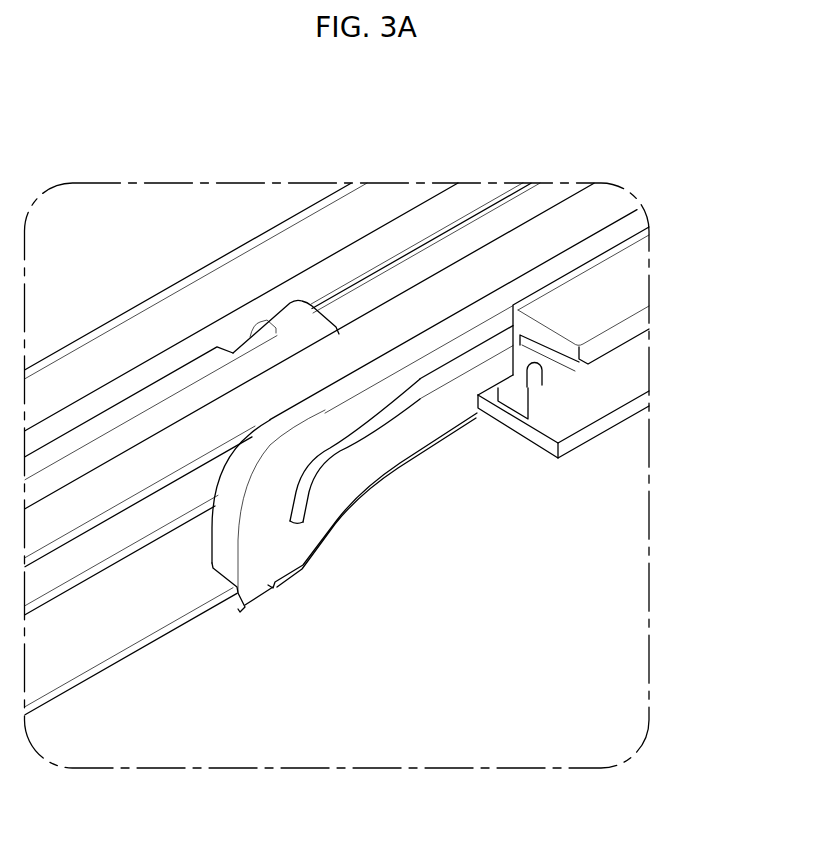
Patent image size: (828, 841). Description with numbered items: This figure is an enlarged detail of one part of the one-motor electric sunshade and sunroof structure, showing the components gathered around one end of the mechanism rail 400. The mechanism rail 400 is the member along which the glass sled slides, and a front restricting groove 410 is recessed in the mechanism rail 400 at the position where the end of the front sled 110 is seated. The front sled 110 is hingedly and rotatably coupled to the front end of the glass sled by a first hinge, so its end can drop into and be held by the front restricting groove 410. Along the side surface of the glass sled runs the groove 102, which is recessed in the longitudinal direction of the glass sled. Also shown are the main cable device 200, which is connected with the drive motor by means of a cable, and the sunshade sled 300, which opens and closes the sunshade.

The front sled 110 is at (363, 377).
The groove 102 is at (470, 355).
The main cable device 200 is at (599, 277).
The sunshade sled 300 is at (634, 439).
The mechanism rail 400 is at (127, 641).
The front restricting groove 410 is at (237, 607).